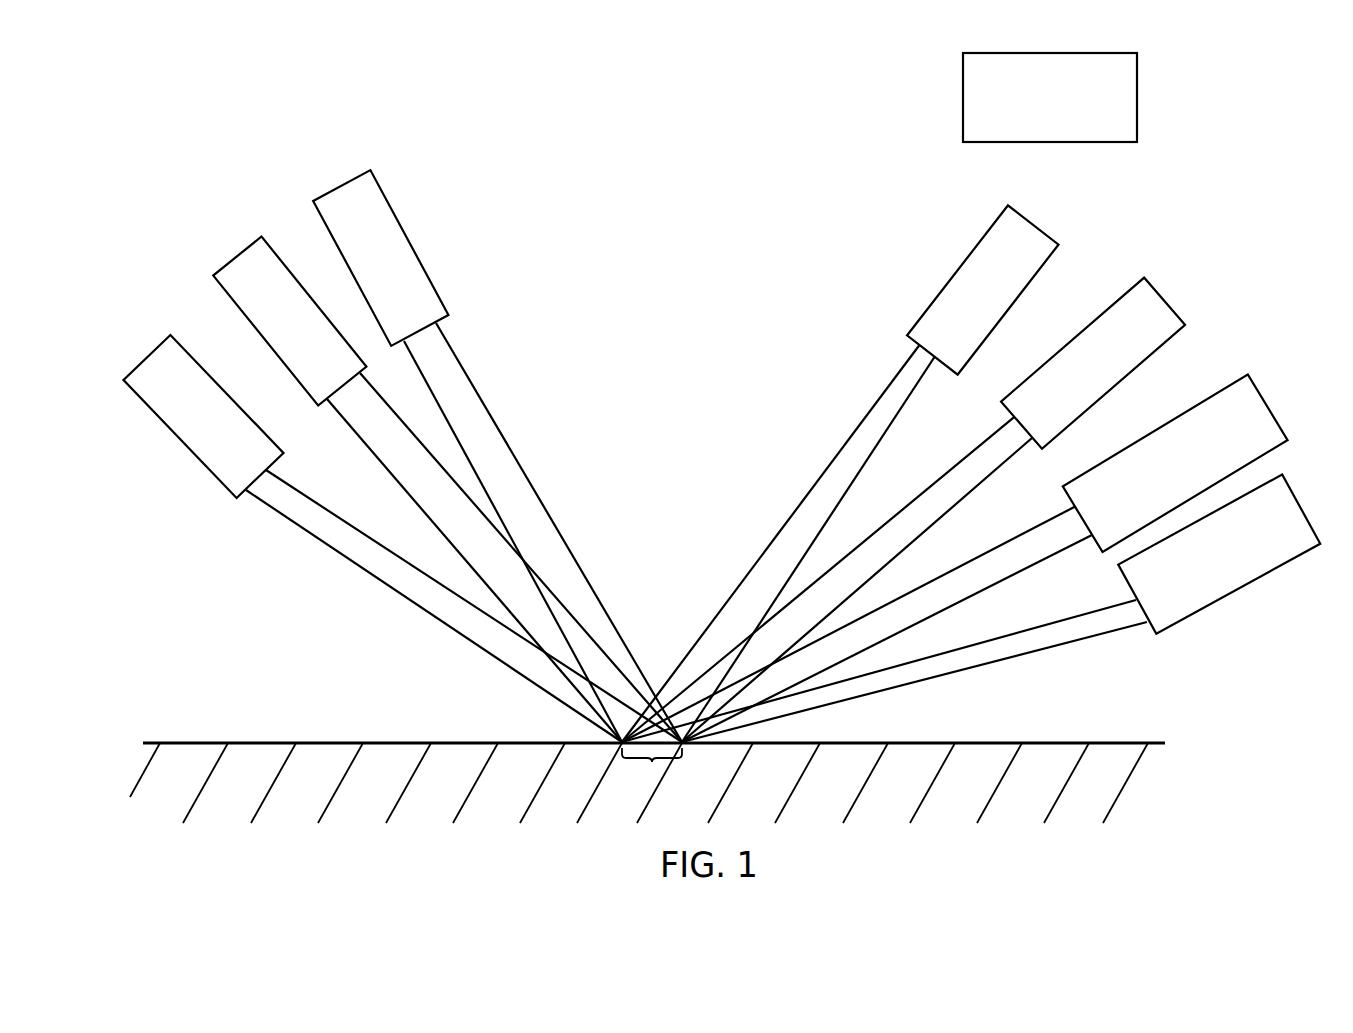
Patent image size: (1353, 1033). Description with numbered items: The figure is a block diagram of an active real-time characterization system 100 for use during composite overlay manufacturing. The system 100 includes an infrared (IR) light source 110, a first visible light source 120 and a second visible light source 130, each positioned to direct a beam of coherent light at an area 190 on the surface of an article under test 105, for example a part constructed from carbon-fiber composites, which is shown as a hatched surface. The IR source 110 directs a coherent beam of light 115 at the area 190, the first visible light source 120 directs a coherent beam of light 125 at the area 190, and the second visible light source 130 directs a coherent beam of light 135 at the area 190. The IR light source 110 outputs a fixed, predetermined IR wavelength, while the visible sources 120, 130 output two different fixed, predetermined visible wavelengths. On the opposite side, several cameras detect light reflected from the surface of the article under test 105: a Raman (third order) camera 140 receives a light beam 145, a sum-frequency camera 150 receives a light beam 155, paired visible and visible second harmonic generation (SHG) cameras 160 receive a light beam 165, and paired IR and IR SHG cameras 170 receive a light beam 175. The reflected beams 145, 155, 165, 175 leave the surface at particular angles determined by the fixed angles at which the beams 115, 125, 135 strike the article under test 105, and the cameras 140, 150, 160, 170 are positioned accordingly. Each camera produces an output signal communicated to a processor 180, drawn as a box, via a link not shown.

The active real-time characterization system 100 is at (745, 87).
The article under test 105 is at (1165, 745).
The infrared (IR) light source 110 is at (184, 349).
The coherent beam of light 115 is at (322, 542).
The first visible light source 120 is at (260, 236).
The coherent beam of light 125 is at (399, 479).
The second visible light source 130 is at (368, 170).
The coherent beam of light 135 is at (470, 382).
The Raman (third order) camera 140 is at (954, 274).
The light beam 145 is at (878, 403).
The sum-frequency camera 150 is at (1144, 278).
The light beam 155 is at (943, 468).
The paired visible and visible second harmonic generation (SHG) cameras 160 is at (1249, 374).
The light beam 165 is at (1006, 534).
The paired IR and IR second harmonic generation (SHG) cameras 170 is at (1297, 499).
The light beam 175 is at (1040, 617).
The processor 180 is at (963, 63).
The area 190 is at (652, 768).